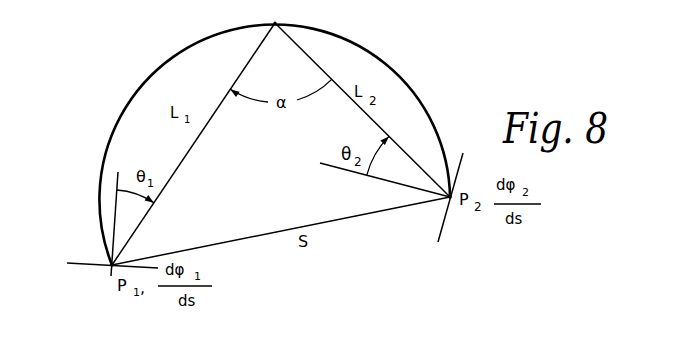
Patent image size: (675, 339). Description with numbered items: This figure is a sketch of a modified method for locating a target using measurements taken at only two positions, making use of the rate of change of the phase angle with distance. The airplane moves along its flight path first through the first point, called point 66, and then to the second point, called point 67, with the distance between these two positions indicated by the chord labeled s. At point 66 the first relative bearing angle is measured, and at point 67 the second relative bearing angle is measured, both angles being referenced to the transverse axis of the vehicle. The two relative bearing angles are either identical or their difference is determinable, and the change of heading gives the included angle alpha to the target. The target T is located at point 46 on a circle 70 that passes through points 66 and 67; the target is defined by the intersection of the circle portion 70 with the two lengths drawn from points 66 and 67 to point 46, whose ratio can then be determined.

The point 46 is at (277, 22).
The circle 70 is at (402, 75).
The point P1 66 is at (112, 269).
The point P2 67 is at (452, 200).